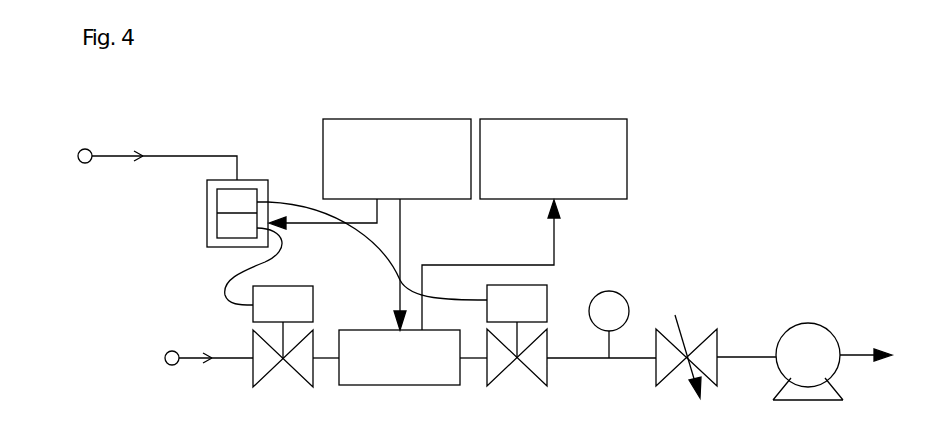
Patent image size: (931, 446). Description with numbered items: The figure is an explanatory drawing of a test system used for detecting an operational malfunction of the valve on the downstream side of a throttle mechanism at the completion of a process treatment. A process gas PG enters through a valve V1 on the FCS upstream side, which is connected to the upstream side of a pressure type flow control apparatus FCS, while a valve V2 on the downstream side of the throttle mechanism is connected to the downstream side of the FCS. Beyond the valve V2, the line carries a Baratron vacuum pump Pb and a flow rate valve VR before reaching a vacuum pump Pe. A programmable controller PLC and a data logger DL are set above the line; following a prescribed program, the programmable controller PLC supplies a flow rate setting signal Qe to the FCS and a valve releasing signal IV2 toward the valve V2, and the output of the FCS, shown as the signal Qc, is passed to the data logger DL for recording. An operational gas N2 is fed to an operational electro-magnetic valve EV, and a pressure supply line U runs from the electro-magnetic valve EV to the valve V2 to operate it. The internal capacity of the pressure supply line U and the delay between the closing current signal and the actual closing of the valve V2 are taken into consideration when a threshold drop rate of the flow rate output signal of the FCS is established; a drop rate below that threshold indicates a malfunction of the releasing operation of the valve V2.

The operational gas N2 is at (148, 151).
The operational electro-magnetic valve EV is at (207, 215).
The valve releasing signal IV2 is at (305, 222).
The programmable controller PLC is at (399, 117).
The data logger DL is at (551, 117).
The flow rate output signal Qc is at (560, 211).
The pressure supply line U is at (370, 248).
The flow rate setting signal Qe is at (396, 322).
The process gas PG is at (213, 353).
The valve on the FCS upstream side V1 is at (276, 373).
The pressure type flow control apparatus FCS is at (400, 357).
The valve on the downstream side of the throttle mechanism V2 is at (512, 368).
The Baratron vacuum pump Pb is at (609, 324).
The flow rate valve VR is at (676, 373).
The vacuum pump Pe is at (808, 371).